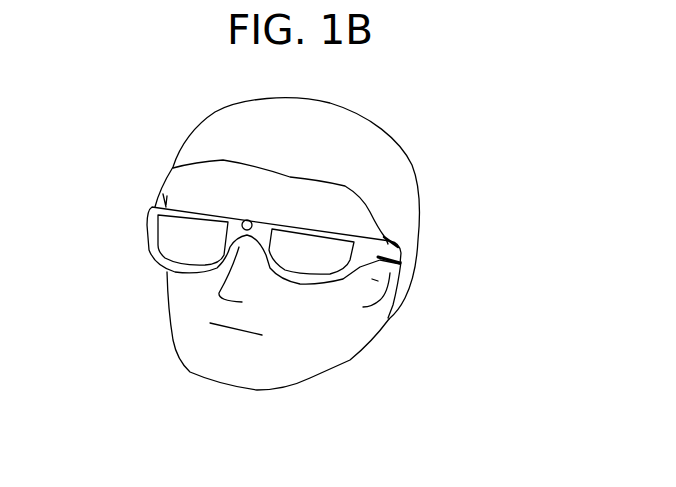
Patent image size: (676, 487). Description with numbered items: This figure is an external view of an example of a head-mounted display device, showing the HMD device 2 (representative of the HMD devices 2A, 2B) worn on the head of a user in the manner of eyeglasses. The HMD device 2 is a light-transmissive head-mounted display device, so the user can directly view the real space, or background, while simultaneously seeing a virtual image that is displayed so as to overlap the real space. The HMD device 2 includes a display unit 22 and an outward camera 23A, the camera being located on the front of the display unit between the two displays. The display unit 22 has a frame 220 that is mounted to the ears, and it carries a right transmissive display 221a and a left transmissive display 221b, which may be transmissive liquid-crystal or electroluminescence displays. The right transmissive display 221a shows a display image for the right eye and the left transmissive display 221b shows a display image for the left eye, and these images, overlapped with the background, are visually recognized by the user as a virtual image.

The display unit 22 is at (374, 234).
The right transmissive display 221a is at (166, 233).
The left transmissive display 221b is at (317, 268).
The outward camera 23A is at (243, 222).
The HMD device 2 is at (461, 224).
The HMD device 2A is at (461, 224).
The HMD device 2B is at (393, 240).
The frame 220 is at (405, 254).